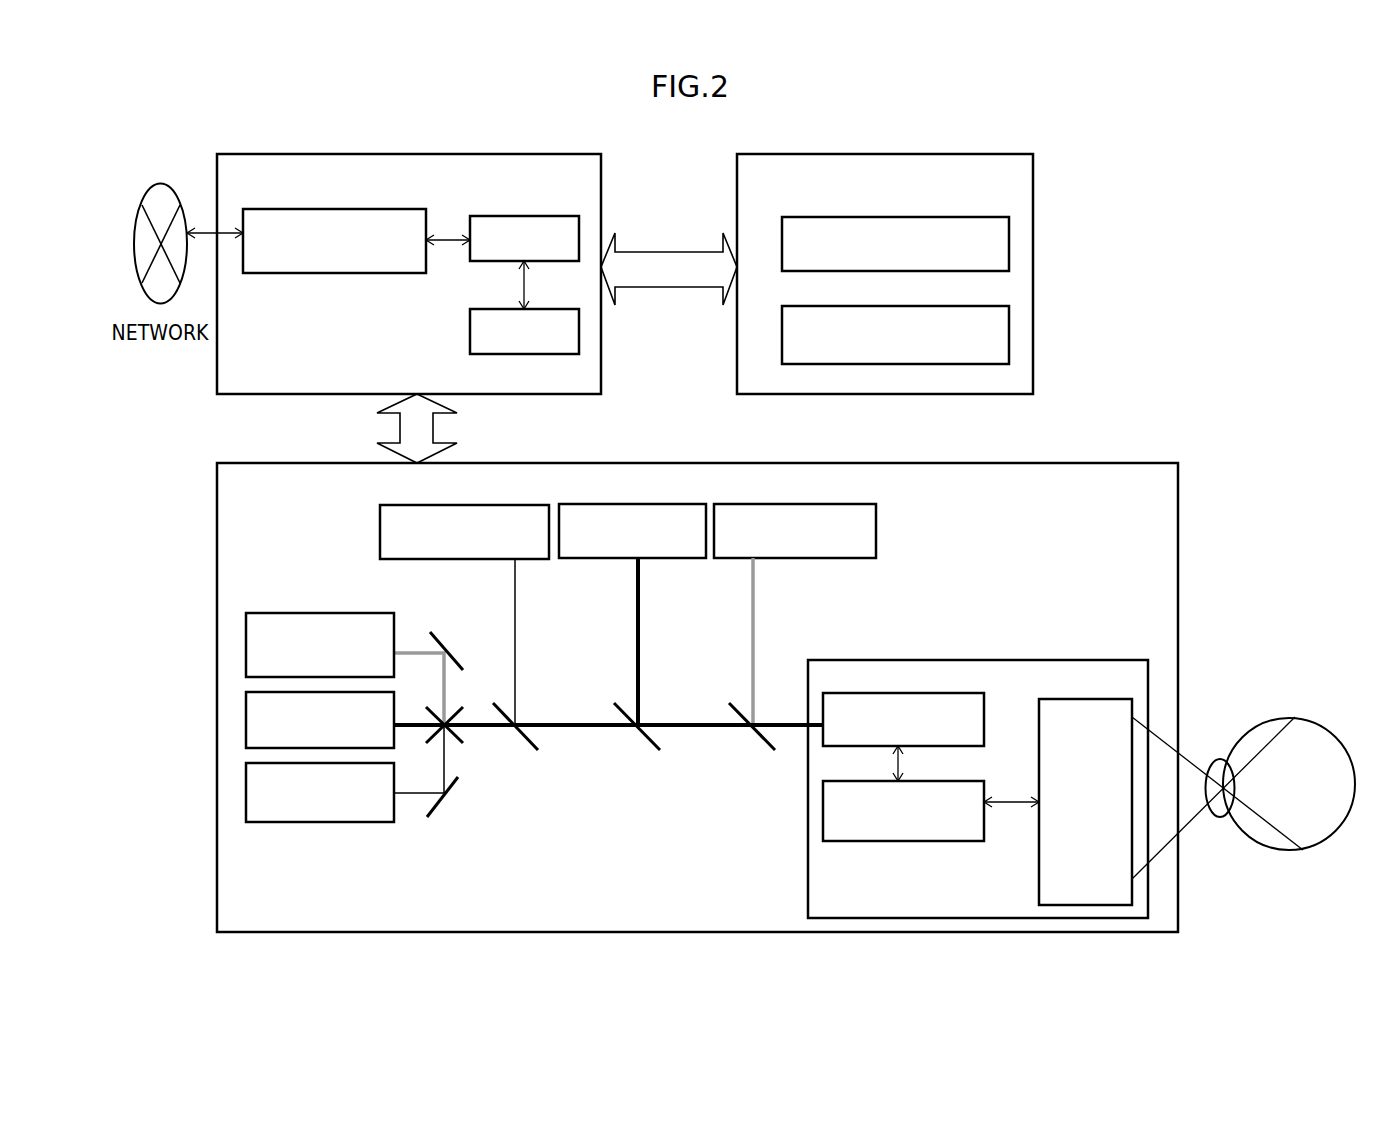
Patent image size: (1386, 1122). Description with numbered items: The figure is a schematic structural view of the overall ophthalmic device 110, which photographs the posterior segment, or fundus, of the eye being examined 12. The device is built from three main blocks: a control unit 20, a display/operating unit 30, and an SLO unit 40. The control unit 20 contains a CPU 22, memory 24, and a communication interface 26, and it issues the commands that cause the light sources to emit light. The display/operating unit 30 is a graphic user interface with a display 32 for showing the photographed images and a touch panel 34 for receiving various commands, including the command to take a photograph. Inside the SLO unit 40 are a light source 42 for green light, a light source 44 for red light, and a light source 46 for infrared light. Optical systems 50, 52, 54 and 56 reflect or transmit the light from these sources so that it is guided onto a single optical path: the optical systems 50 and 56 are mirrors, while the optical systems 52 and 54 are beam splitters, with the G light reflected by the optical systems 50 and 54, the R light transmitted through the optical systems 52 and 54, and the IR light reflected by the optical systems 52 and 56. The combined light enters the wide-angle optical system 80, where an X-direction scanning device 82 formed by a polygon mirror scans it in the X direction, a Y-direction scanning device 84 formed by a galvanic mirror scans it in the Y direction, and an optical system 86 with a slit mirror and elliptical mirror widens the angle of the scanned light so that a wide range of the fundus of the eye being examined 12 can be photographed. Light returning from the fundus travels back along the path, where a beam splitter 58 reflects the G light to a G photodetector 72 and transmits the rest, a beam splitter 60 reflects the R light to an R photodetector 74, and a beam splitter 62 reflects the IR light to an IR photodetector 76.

The ophthalmic device 110 is at (558, 130).
The control unit 20 is at (326, 154).
The CPU 22 is at (548, 216).
The memory 24 is at (540, 309).
The communication interface (I/F) 26 is at (339, 273).
The display/operating unit 30 is at (791, 154).
The display 32 is at (1010, 242).
The touch panel 34 is at (1010, 340).
The SLO unit 40 is at (1030, 463).
The light source for G light 42 is at (246, 653).
The light source for R light 44 is at (246, 724).
The light source for IR light 46 is at (246, 796).
The optical system (mirror) 50 is at (439, 637).
The optical system (beam splitter) 52 is at (455, 712).
The optical system (beam splitter) 54 is at (462, 741).
The optical system (mirror) 56 is at (446, 803).
The beam splitter 58 is at (762, 745).
The beam splitter 60 is at (652, 745).
The beam splitter 62 is at (535, 738).
The G photodetector 72 is at (735, 504).
The R photodetector 74 is at (615, 504).
The IR photodetector 76 is at (485, 505).
The wide-angle optical system 80 is at (840, 660).
The X-direction scanning device 82 is at (970, 693).
The Y-direction scanning device 84 is at (939, 841).
The optical system 86 is at (1039, 866).
The eye being examined 12 is at (1316, 845).